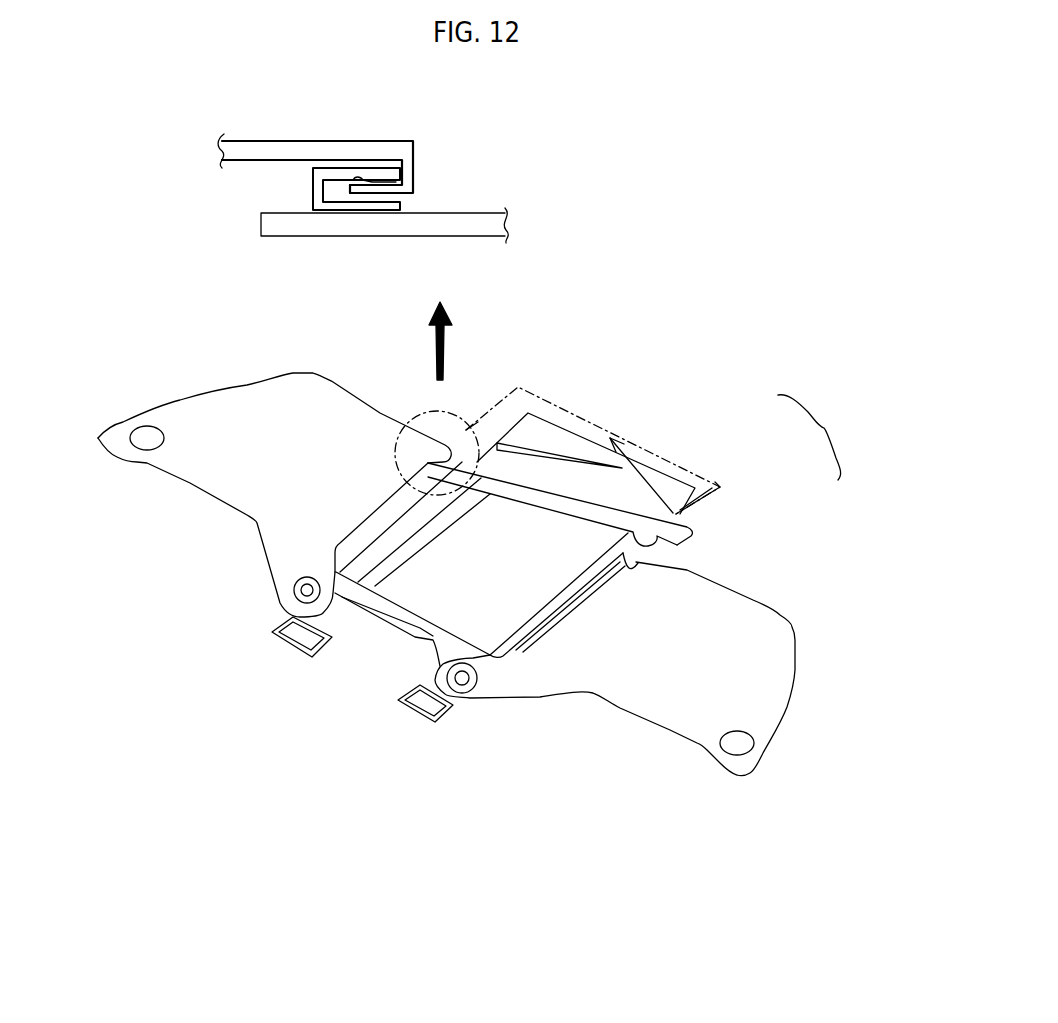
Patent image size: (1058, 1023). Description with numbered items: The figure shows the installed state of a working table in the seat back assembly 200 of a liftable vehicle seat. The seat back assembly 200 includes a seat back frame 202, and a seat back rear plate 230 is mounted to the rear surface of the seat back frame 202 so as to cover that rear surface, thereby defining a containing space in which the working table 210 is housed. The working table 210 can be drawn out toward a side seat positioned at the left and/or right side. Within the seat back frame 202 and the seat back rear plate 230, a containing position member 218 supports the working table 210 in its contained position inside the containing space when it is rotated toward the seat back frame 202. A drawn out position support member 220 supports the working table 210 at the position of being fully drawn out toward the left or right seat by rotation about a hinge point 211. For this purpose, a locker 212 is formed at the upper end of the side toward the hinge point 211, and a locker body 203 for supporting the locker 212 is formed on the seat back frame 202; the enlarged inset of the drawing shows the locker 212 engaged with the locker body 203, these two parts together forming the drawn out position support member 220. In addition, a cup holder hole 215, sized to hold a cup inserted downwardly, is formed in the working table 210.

The seat back assembly 200 is at (546, 307).
The seat back frame 202 is at (455, 220).
The locker body 203 is at (317, 197).
The working table 210 is at (255, 410).
The hinge point 211 is at (292, 590).
The locker 212 is at (383, 191).
The cup holder hole 215 is at (143, 432).
The containing position member 218 is at (643, 463).
The drawn out position support member 220 is at (348, 260).
The seat back rear plate 230 is at (663, 452).